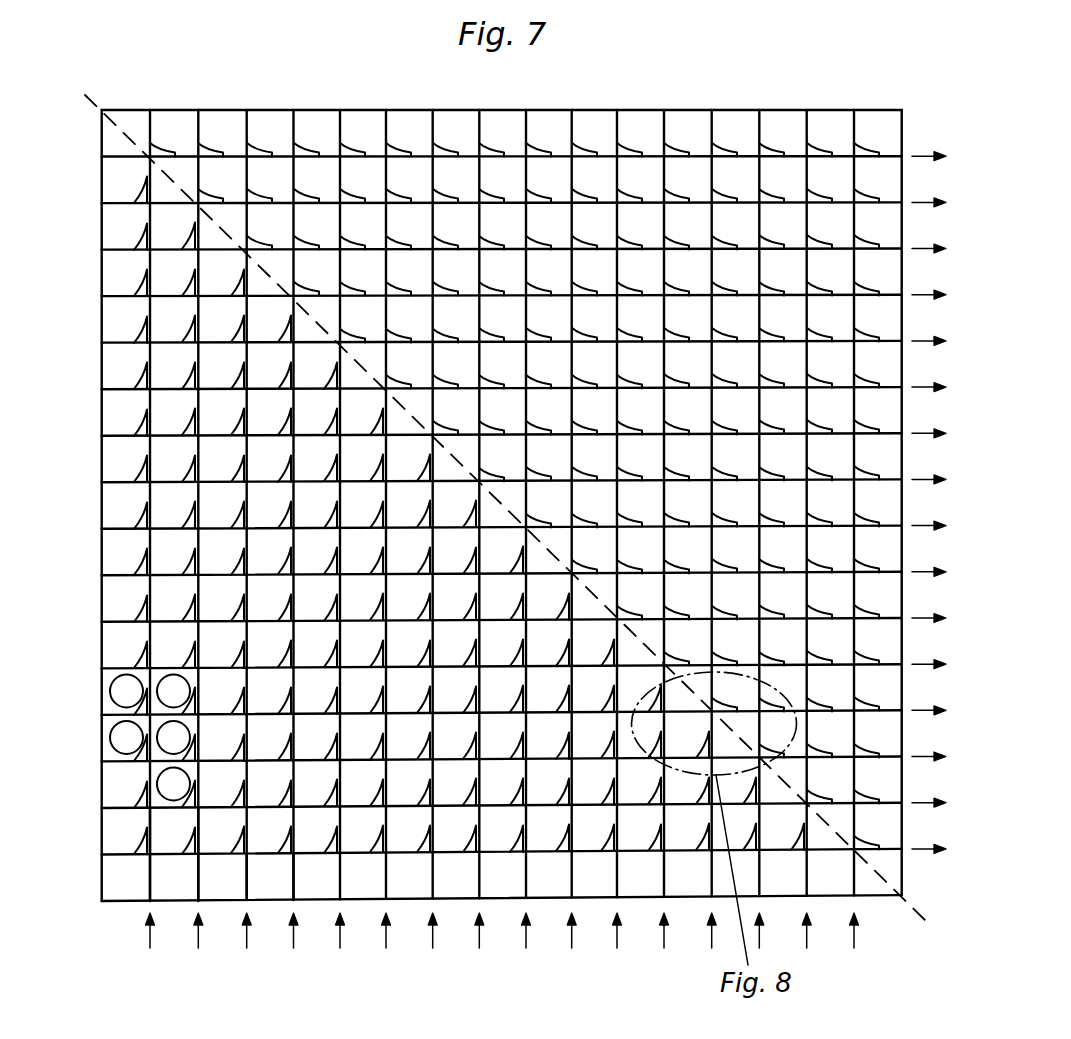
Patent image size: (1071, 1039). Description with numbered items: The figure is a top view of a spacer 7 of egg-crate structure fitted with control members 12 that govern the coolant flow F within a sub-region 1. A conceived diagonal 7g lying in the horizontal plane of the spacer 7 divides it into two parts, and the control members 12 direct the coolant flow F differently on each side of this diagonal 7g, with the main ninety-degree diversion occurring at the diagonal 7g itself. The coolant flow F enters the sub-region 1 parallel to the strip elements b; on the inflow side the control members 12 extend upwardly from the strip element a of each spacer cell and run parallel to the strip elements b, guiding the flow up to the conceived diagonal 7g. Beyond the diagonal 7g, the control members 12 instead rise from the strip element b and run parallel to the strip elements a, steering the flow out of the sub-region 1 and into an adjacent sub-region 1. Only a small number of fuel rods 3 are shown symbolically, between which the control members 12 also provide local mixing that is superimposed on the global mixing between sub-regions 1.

The sub-region 1 is at (95, 573).
The fuel rods 3 is at (118, 690).
The spacer 7 is at (105, 921).
The conceived diagonal 7g is at (930, 922).
The control members 12 is at (142, 848).
The strip element a is at (163, 807).
The strip elements b is at (246, 873).
The coolant flow F is at (546, 554).